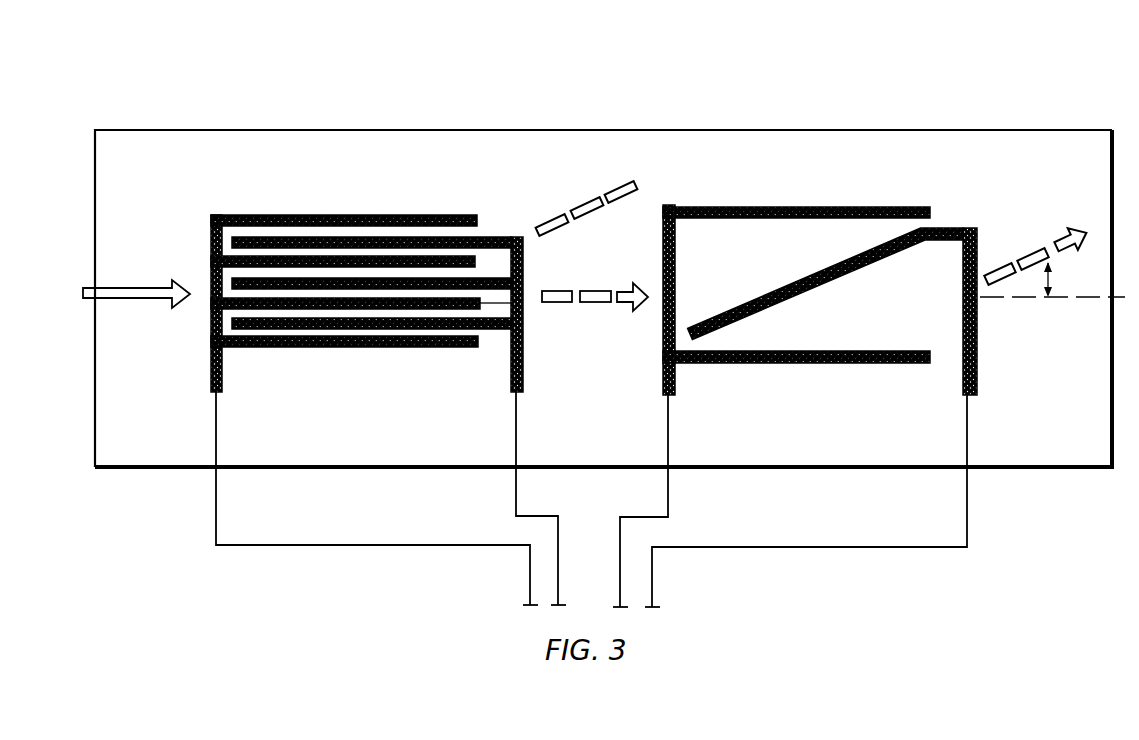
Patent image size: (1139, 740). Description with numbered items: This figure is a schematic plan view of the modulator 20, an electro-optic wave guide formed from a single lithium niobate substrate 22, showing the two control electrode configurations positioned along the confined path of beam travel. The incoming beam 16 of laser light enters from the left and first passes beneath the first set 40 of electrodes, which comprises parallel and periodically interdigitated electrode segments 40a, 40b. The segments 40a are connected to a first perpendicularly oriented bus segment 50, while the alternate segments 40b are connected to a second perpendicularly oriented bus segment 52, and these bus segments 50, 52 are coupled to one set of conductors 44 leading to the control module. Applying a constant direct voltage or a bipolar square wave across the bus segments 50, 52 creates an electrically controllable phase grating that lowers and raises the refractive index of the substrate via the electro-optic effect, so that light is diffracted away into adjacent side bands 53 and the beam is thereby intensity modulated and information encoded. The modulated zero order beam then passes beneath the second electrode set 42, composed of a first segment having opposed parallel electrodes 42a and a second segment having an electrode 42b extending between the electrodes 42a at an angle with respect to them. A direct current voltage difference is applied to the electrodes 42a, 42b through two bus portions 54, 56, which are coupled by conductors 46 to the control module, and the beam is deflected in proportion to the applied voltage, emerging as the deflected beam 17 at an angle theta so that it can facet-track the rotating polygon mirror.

The beam of light 16 is at (108, 296).
The deflected beam 17 is at (1034, 252).
The modulator 20 is at (756, 105).
The substrate 22 is at (528, 130).
The first set of electrodes 40 is at (401, 198).
The electrode segments 40a is at (479, 220).
The alternate electrode segments 40b is at (236, 238).
The second electrode set 42 is at (822, 197).
The opposed parallel electrodes 42a is at (813, 220).
The angled electrode 42b is at (853, 268).
The conductors 44 is at (514, 500).
The conductors 46 is at (669, 502).
The first bus segment 50 is at (211, 240).
The second bus segment 52 is at (524, 272).
The side bands 53 is at (614, 189).
The bus portion 54 is at (663, 239).
The bus portion 56 is at (980, 237).